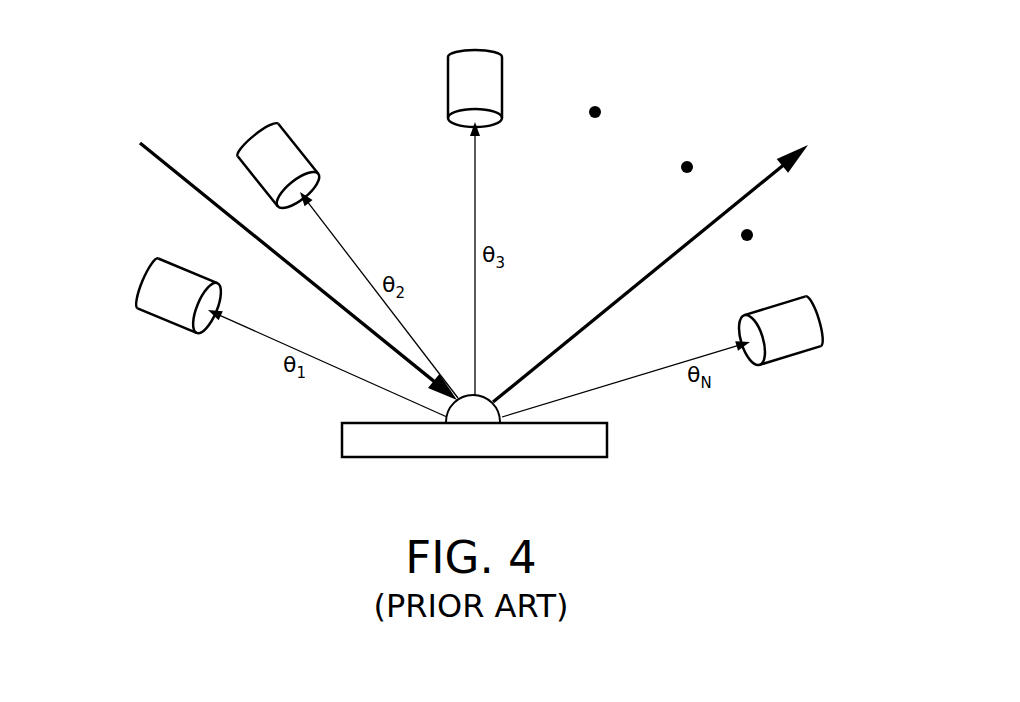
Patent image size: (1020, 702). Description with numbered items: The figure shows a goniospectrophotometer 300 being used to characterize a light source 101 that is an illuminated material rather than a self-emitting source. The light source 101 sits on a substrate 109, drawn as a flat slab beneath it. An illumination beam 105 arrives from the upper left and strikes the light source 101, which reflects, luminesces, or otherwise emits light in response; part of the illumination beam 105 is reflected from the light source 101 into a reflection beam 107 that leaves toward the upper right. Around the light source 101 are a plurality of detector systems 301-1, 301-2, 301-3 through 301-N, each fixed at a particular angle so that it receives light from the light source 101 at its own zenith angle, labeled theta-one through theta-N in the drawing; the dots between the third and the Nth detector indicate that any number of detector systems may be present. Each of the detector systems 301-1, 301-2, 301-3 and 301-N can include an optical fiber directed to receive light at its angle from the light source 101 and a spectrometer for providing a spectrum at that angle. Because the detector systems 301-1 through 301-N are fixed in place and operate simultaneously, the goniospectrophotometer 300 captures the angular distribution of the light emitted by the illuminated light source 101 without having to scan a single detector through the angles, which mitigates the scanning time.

The goniospectrophotometer 300 is at (674, 49).
The light source 101 is at (487, 397).
The illumination beam 105 is at (158, 160).
The reflection beam 107 is at (747, 197).
The substrate 109 is at (548, 457).
The detector system 301-1 is at (139, 278).
The detector system 301-2 is at (250, 128).
The detector system 301-3 is at (472, 50).
The detector system 301-N is at (802, 357).